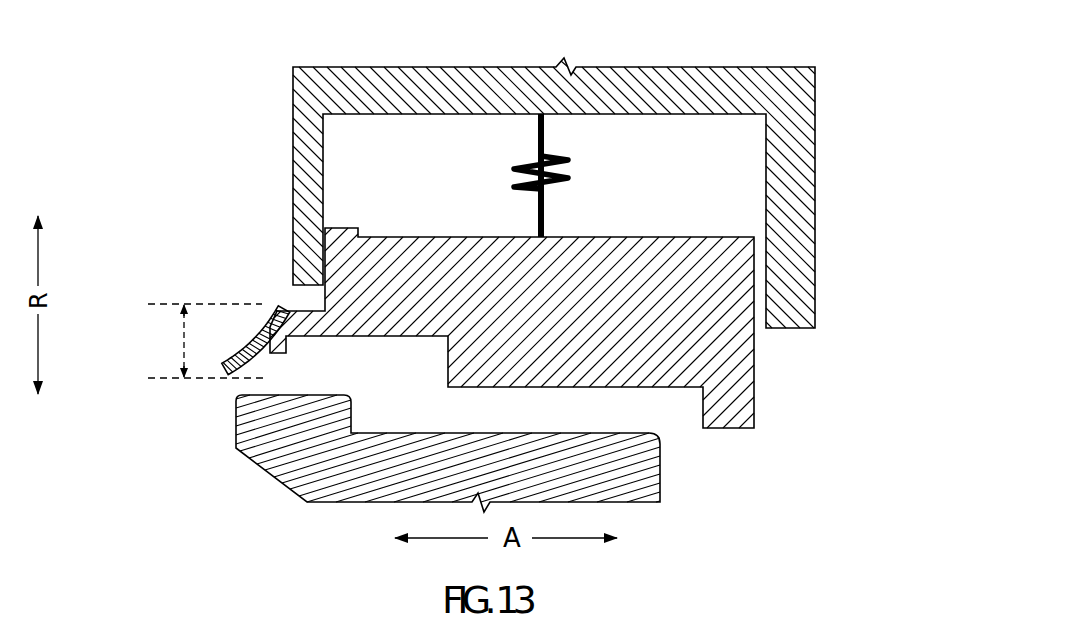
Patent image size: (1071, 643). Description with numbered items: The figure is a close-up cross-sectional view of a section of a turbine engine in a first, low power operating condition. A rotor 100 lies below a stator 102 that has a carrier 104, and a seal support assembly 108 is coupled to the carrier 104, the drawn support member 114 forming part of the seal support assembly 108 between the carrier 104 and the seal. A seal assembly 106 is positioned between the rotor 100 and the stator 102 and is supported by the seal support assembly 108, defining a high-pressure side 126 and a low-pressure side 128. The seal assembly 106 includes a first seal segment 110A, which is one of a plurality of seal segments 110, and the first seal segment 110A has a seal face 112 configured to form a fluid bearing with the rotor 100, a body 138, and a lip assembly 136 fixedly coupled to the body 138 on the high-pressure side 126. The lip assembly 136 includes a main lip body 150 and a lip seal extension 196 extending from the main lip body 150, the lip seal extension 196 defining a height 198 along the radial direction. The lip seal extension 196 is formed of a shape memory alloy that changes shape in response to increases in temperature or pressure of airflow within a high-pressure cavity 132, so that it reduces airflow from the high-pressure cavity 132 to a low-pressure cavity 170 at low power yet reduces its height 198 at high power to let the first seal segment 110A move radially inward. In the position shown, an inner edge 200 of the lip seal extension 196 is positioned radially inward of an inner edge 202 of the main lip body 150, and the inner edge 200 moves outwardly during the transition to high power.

The rotor 100 is at (632, 477).
The stator 102 is at (554, 168).
The carrier 104 is at (653, 83).
The seal assembly 106 is at (716, 226).
The seal support assembly 108 is at (568, 125).
The seal segments 110 is at (608, 302).
The first seal segment 110A is at (724, 289).
The seal face 112 is at (545, 391).
The rod 114 is at (545, 137).
The high-pressure side 126 is at (208, 127).
The low-pressure side 128 is at (818, 352).
The high-pressure cavity 132 is at (165, 262).
The lip assembly 136 is at (262, 262).
The body 138 is at (627, 260).
The main lip body 150 is at (304, 334).
The low-pressure cavity 170 is at (417, 407).
The lip seal extension 196 is at (260, 313).
The height 198 is at (182, 348).
The inner edge 200 is at (224, 381).
The inner edge 202 is at (273, 357).